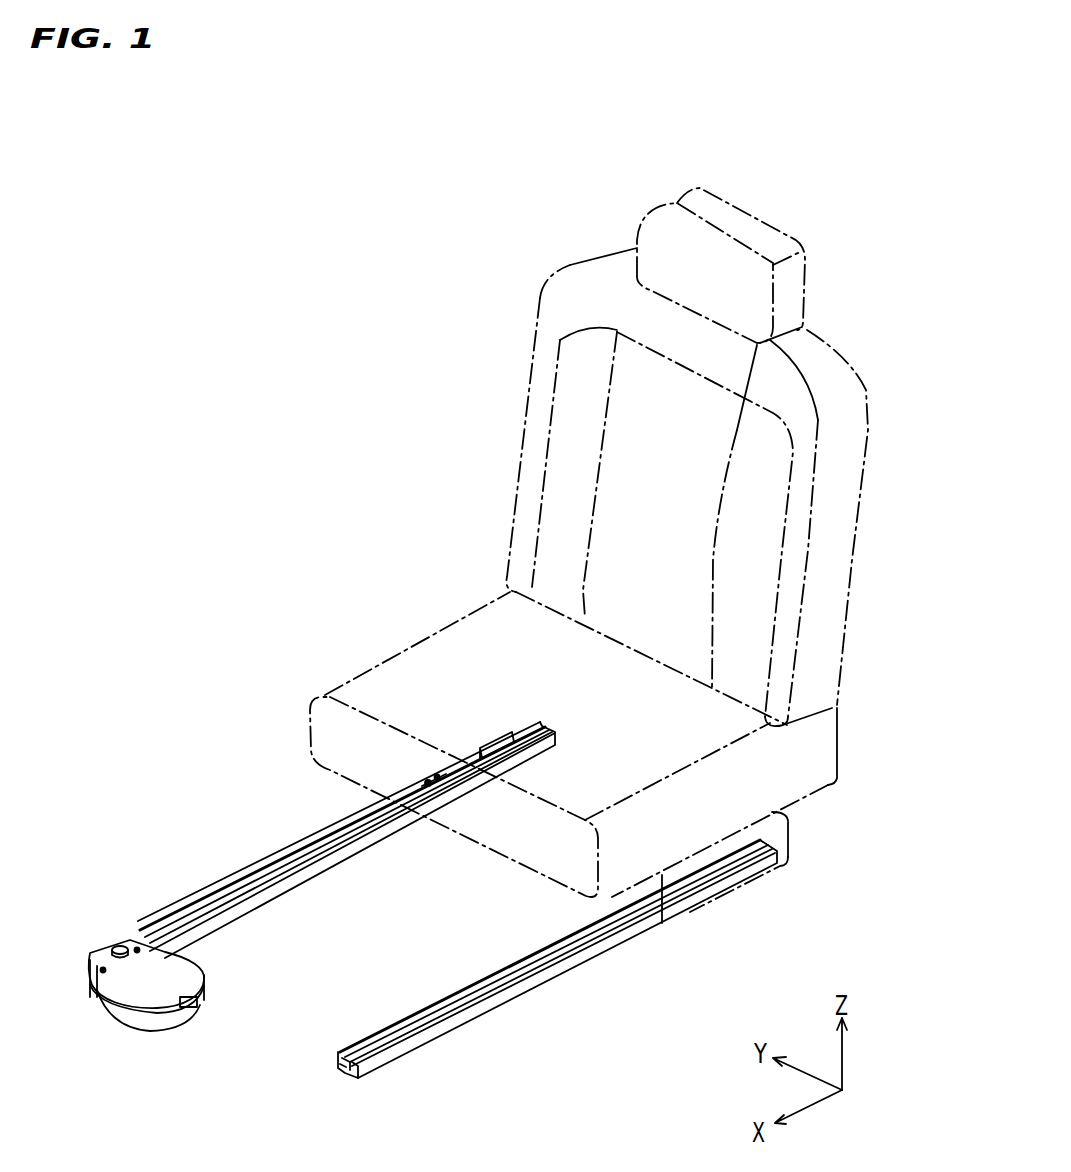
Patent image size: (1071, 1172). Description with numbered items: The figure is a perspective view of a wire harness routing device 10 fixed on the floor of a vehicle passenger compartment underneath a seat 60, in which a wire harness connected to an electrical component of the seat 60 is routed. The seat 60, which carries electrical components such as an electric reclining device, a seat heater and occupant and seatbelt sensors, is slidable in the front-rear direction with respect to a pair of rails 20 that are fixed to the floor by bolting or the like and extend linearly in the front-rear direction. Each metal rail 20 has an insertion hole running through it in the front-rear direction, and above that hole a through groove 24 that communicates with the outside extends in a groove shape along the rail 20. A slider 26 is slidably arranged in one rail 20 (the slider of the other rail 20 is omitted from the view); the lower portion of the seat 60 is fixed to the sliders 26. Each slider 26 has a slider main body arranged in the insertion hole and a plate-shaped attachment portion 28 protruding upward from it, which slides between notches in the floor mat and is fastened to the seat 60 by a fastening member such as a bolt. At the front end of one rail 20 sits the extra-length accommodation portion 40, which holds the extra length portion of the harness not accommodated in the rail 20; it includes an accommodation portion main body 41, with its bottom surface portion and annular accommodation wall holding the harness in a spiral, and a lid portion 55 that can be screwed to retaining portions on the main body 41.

The wire harness routing device 10 is at (433, 849).
The rail 20 is at (457, 849).
The through groove 24 is at (243, 887).
The slider 26 is at (421, 691).
The attachment portion 28 is at (478, 755).
The extra-length accommodation portion 40 is at (204, 999).
The accommodation portion main body 41 is at (170, 1022).
The lid portion 55 is at (180, 977).
The seat 60 is at (857, 522).